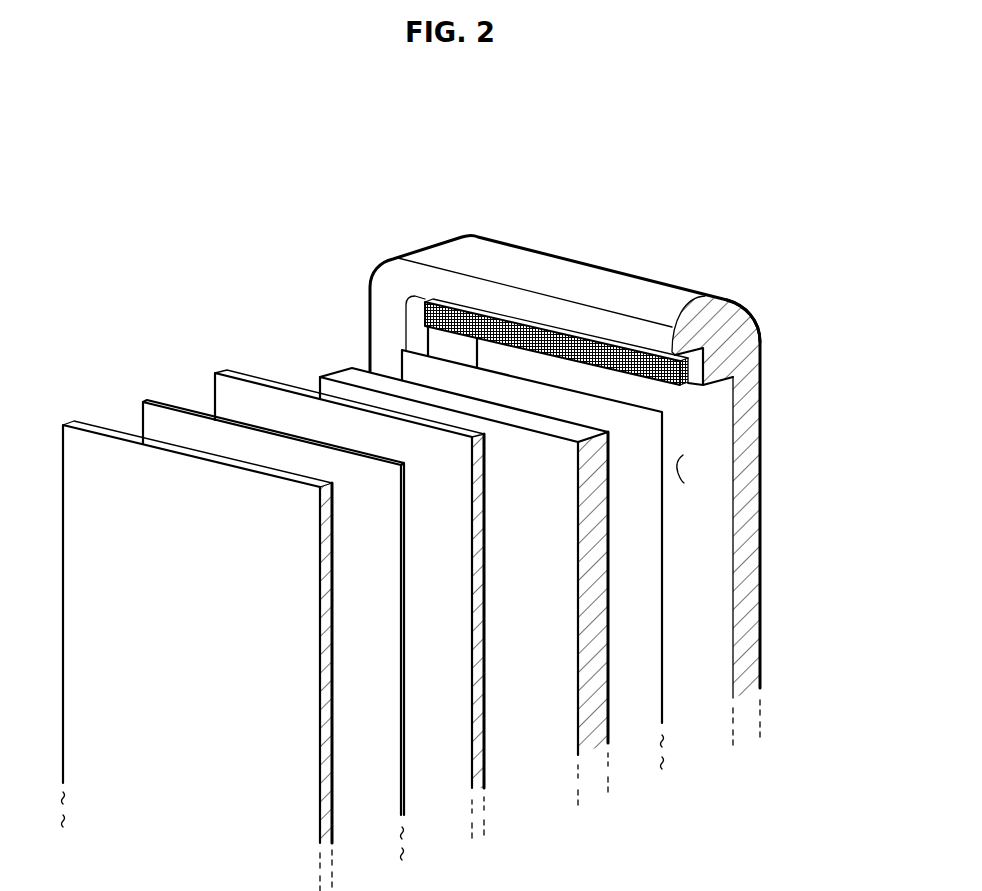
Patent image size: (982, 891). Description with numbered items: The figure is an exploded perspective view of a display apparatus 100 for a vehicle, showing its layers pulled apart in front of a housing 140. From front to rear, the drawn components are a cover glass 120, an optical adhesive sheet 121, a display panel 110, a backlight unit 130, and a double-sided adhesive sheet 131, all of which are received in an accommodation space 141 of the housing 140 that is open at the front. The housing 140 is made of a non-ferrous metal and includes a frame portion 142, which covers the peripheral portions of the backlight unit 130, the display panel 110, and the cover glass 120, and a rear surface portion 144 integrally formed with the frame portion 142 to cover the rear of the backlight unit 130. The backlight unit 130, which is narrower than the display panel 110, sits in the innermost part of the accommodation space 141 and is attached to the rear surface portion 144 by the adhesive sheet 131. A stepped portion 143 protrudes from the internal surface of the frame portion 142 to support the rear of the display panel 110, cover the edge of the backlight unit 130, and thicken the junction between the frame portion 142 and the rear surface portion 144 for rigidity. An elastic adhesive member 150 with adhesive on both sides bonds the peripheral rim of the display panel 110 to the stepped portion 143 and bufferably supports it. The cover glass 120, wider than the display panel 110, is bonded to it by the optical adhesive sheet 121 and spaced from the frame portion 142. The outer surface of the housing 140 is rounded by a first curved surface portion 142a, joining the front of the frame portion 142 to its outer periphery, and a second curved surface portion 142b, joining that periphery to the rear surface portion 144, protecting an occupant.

The display apparatus 100 is at (358, 174).
The display panel 110 is at (238, 372).
The cover glass 120 is at (86, 424).
The optical adhesive sheet 121 is at (157, 402).
The backlight unit 130 is at (344, 372).
The double-sided adhesive sheet 131 is at (640, 585).
The housing 140 is at (767, 429).
The accommodation space 141 is at (678, 473).
The frame portion 142 is at (703, 325).
The first curved surface portion 142a is at (632, 333).
The second curved surface portion 142b is at (752, 312).
The stepped portion 143 is at (710, 373).
The rear surface portion 144 is at (753, 537).
The adhesive member 150 is at (527, 340).